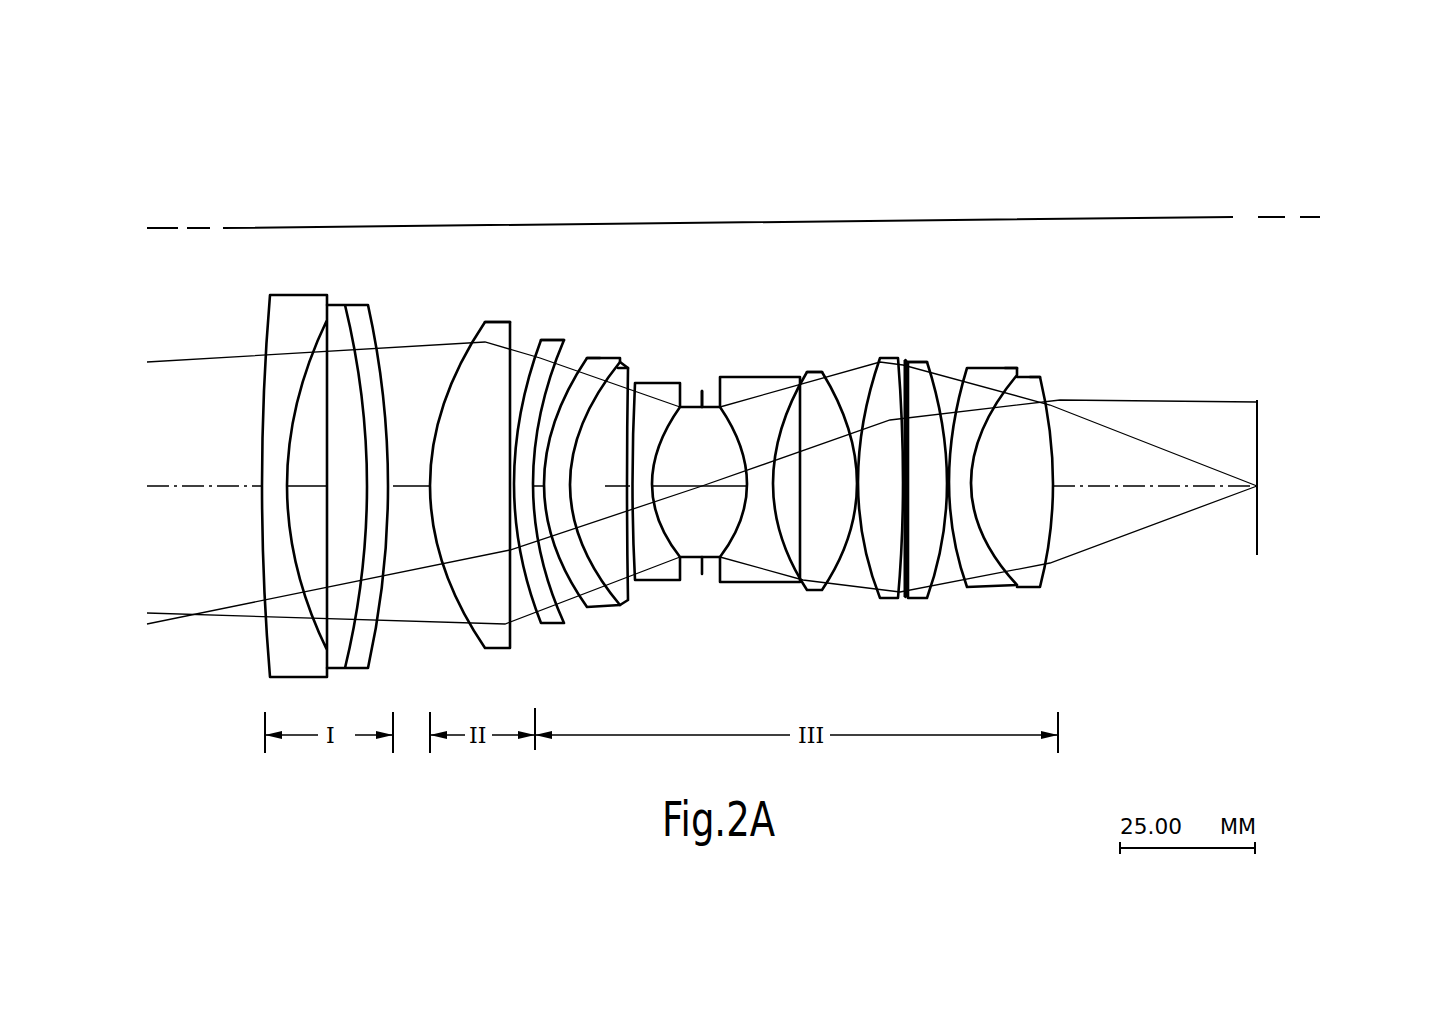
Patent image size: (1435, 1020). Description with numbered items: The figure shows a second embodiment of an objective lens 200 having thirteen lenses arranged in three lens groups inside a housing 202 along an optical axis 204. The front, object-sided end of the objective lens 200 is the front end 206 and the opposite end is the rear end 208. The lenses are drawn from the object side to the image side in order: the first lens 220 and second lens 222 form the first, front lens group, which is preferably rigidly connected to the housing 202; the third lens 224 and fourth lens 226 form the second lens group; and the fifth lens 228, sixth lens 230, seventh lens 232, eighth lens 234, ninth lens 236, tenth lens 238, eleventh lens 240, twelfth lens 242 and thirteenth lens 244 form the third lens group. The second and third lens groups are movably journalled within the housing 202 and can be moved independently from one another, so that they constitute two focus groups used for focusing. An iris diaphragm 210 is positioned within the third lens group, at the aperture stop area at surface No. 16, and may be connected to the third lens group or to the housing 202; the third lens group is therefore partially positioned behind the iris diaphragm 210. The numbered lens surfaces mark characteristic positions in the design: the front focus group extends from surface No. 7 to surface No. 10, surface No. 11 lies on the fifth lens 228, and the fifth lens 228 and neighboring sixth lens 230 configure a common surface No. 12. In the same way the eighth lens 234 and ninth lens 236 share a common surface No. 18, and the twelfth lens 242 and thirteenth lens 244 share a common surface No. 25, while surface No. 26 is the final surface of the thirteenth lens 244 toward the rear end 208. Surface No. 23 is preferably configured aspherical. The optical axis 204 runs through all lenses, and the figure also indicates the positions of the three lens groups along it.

The objective lens 200 is at (1170, 181).
The housing 202 is at (903, 221).
The optical axis 204 is at (1175, 486).
The front end 206 is at (147, 322).
The rear end 208 is at (1296, 360).
The iris diaphragm 210 is at (711, 388).
The first lens 220 is at (292, 310).
The second lens 222 is at (360, 318).
The third lens 224 is at (497, 633).
The fourth lens 226 is at (553, 620).
The fifth lens 228 is at (601, 609).
The sixth lens 230 is at (632, 595).
The seventh lens 232 is at (658, 380).
The eighth lens 234 is at (762, 380).
The ninth lens 236 is at (807, 563).
The tenth lens 238 is at (890, 578).
The eleventh lens 240 is at (923, 578).
The twelfth lens 242 is at (998, 580).
The thirteenth lens 244 is at (1043, 568).
The surface No. 7 is at (494, 310).
The surface No. 10 is at (562, 328).
The surface No. 11 is at (591, 346).
The surface No. 12 is at (621, 345).
The surface No. 16 is at (700, 376).
The surface No. 18 is at (801, 360).
The surface No. 23 is at (928, 350).
The surface No. 25 is at (1014, 356).
The surface No. 26 is at (1043, 365).